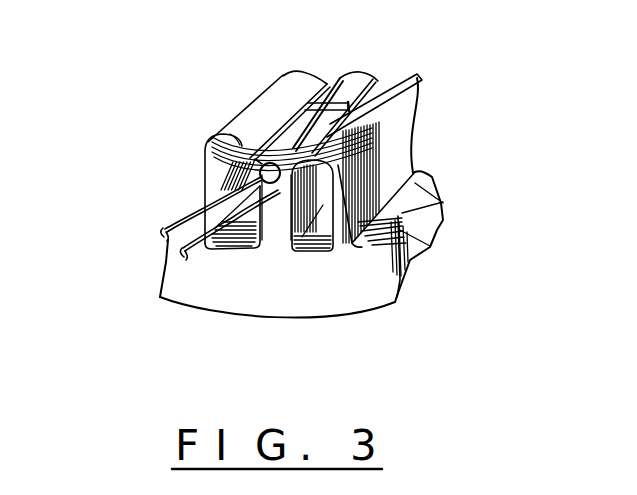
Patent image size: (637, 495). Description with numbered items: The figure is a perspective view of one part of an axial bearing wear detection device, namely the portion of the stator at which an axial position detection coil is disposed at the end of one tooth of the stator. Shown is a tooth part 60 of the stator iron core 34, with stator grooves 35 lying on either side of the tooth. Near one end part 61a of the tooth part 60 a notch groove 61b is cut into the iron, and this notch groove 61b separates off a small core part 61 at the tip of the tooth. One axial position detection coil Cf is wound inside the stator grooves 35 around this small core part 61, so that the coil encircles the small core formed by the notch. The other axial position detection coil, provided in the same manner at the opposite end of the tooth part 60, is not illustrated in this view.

The stator iron core 34 is at (297, 307).
The stator grooves 35 is at (237, 240).
The tooth part 60 is at (272, 237).
The small core part 61 is at (303, 128).
The end part 61a is at (260, 177).
The notch groove 61b is at (344, 101).
The axial position detection coil Cf is at (257, 148).